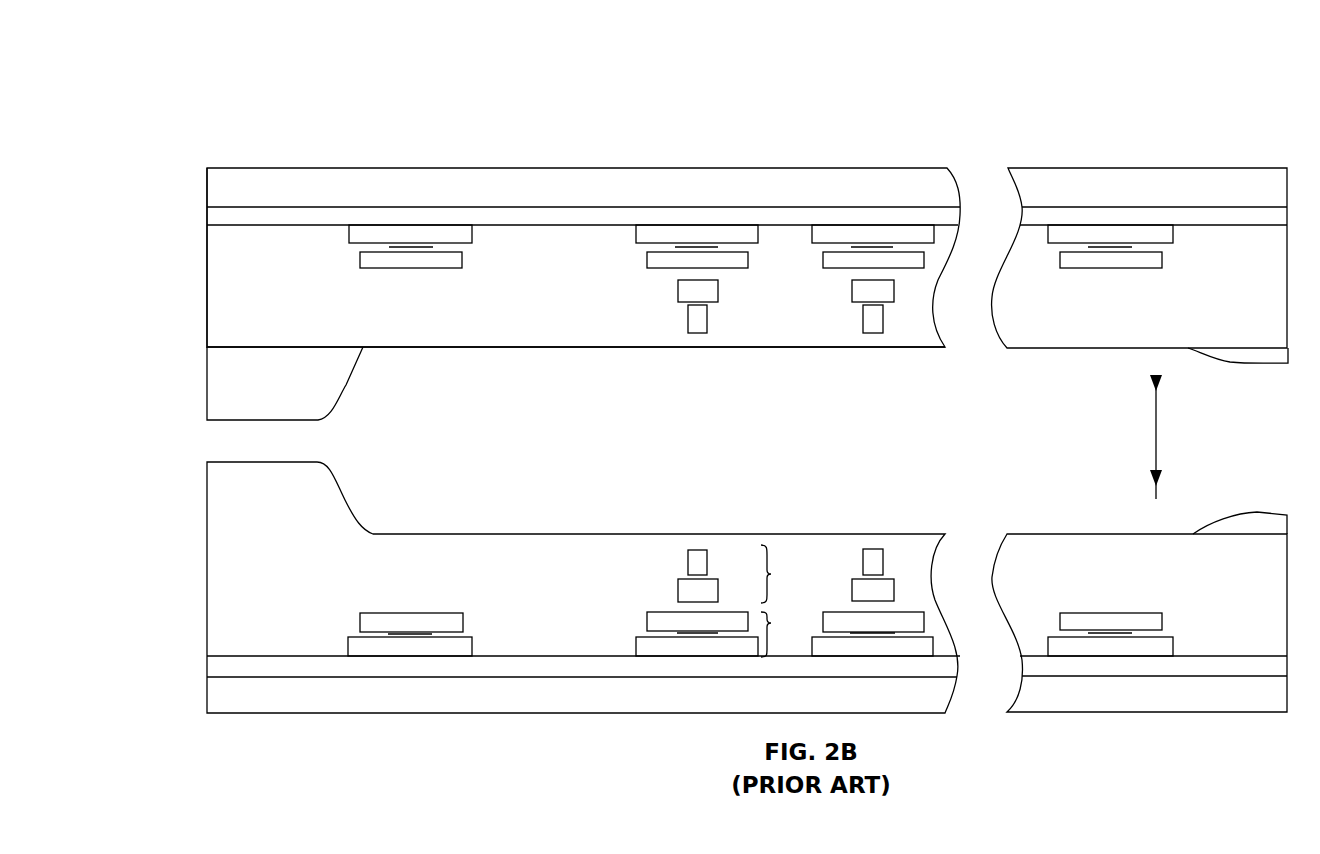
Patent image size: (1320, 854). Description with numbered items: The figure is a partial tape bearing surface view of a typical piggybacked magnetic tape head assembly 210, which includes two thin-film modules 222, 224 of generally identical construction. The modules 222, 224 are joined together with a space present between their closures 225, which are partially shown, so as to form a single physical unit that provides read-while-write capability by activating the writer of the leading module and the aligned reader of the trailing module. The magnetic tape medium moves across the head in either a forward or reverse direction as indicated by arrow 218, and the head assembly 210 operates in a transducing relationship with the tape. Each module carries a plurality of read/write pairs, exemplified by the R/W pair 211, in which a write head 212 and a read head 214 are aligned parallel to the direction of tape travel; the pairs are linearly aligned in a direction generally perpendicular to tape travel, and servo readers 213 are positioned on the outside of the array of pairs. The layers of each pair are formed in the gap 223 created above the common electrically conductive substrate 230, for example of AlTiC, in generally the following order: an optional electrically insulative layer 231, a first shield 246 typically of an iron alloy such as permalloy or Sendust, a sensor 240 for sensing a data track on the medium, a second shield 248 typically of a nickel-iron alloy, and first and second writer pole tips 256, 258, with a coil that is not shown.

The magnetic tape head assembly 210 is at (270, 145).
The read/write pair 211 is at (697, 511).
The write head 212 is at (704, 573).
The servo reader 213 is at (760, 441).
The read head 214 is at (676, 617).
The arrow 218 is at (1156, 445).
The thin-film module 222 is at (1187, 168).
The gap 223 is at (473, 347).
The thin-film module 224 is at (1173, 712).
The closure 225 is at (343, 385).
The substrate 230 is at (369, 197).
The electrically insulative layer 231 is at (1217, 660).
The sensor 240 is at (644, 632).
The first shield 246 is at (633, 645).
The second shield 248 is at (647, 614).
The first writer pole tip 256 is at (678, 593).
The second writer pole tip 258 is at (688, 571).